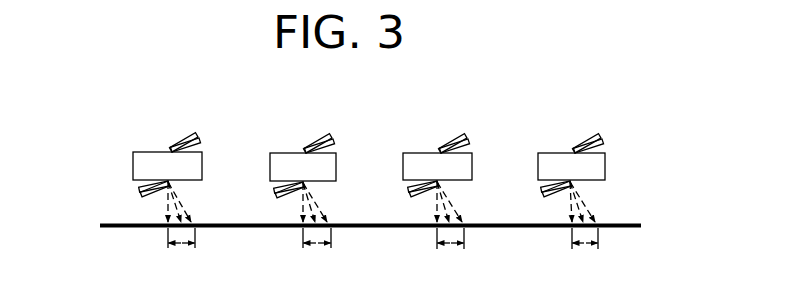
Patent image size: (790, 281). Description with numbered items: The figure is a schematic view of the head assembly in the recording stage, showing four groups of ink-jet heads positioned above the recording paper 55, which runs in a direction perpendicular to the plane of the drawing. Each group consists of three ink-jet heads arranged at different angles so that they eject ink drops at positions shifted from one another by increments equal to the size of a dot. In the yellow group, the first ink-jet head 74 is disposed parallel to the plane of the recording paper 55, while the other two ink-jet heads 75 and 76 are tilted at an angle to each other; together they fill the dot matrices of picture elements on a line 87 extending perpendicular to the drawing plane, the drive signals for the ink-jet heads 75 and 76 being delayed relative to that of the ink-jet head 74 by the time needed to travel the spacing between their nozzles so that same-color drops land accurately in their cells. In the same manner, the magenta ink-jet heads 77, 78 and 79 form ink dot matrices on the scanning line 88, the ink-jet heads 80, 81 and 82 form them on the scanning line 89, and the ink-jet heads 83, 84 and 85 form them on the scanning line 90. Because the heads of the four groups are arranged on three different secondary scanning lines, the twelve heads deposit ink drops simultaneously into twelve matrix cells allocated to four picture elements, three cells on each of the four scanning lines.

The recording paper 55 is at (387, 228).
The first ink-jet head 74 is at (602, 169).
The ink-jet head 75 is at (605, 147).
The ink-jet head 76 is at (595, 141).
The ink-jet head 77 is at (469, 169).
The ink-jet head 78 is at (470, 152).
The ink-jet head 79 is at (455, 148).
The ink-jet head 80 is at (334, 171).
The ink-jet head 81 is at (334, 151).
The ink-jet head 82 is at (318, 148).
The ink-jet head 83 is at (156, 160).
The ink-jet head 84 is at (201, 150).
The ink-jet head 85 is at (184, 147).
The line 87 is at (585, 244).
The scanning line 88 is at (452, 244).
The scanning line 89 is at (317, 244).
The scanning line 90 is at (182, 244).